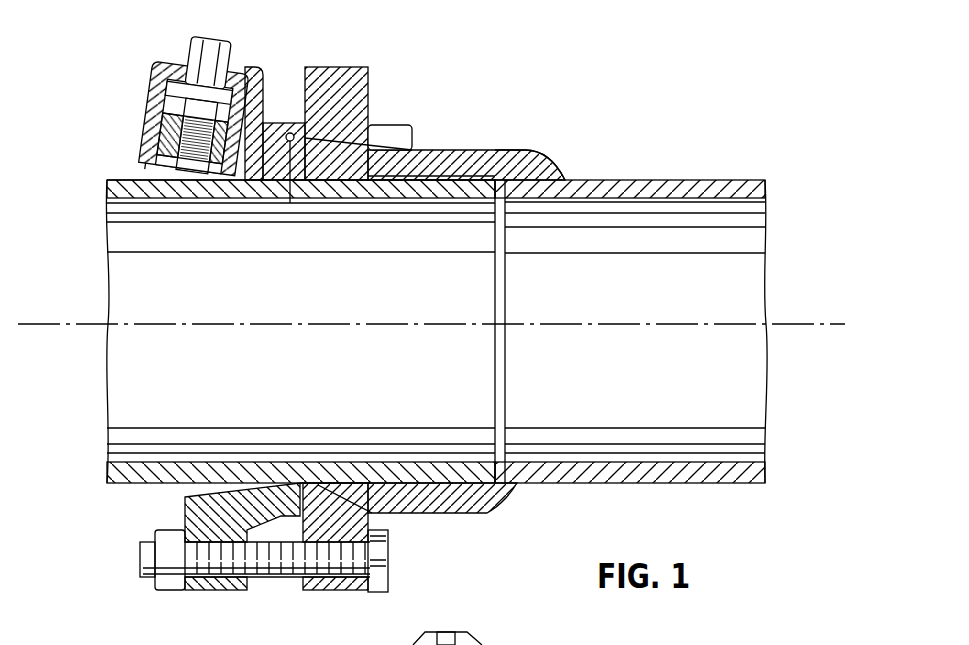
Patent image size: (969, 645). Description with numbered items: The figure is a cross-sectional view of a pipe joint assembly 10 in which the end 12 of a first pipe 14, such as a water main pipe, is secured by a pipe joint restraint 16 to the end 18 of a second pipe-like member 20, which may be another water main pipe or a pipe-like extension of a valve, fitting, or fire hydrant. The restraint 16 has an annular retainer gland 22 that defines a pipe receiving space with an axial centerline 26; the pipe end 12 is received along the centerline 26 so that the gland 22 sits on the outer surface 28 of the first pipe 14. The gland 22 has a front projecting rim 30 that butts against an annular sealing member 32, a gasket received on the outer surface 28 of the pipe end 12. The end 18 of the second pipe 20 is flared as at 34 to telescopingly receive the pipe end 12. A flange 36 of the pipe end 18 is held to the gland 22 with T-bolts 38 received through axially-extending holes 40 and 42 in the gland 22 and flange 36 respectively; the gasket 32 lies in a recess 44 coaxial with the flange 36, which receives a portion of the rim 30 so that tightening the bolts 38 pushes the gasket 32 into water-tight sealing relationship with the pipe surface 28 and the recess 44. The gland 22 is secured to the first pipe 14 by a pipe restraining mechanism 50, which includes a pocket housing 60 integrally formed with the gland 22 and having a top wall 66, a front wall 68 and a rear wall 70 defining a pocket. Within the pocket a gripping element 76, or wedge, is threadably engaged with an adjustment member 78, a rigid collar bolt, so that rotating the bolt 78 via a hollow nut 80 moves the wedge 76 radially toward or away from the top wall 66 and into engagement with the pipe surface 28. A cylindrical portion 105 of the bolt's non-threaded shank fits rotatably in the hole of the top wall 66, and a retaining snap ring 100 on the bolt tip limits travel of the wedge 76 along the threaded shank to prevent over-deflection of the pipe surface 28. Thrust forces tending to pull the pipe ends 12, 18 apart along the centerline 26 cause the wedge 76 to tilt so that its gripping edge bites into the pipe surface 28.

The pipe joint assembly 10 is at (521, 96).
The end of first pipe 12 is at (481, 183).
The first pipe 14 is at (100, 183).
The pipe joint restraint 16 is at (276, 43).
The end of second pipe-like member 18 is at (464, 142).
The second pipe-like member 20 is at (655, 172).
The annular retainer gland 22 is at (288, 67).
The axial centerline 26 is at (277, 322).
The outer surface of first pipe 28 is at (123, 180).
The front projecting rim 30 is at (289, 204).
The annular sealing member 32 is at (337, 483).
The flared portion 34 is at (496, 160).
The flange 36 is at (368, 100).
The T-bolt 38 is at (273, 578).
The axially-extending hole of gland 40 is at (214, 580).
The axially-extending hole of flange 42 is at (341, 580).
The recess 44 is at (398, 150).
The pipe restraining mechanism 50 is at (122, 88).
The pocket housing 60 is at (162, 47).
The top wall 66 is at (170, 100).
The front wall 68 is at (268, 120).
The rear wall 70 is at (142, 112).
The gripping element 76 is at (150, 167).
The adjustment member 78 is at (211, 28).
The hollow nut 80 is at (474, 641).
The retaining snap ring 100 is at (184, 167).
The cylindrical portion 105 is at (165, 78).